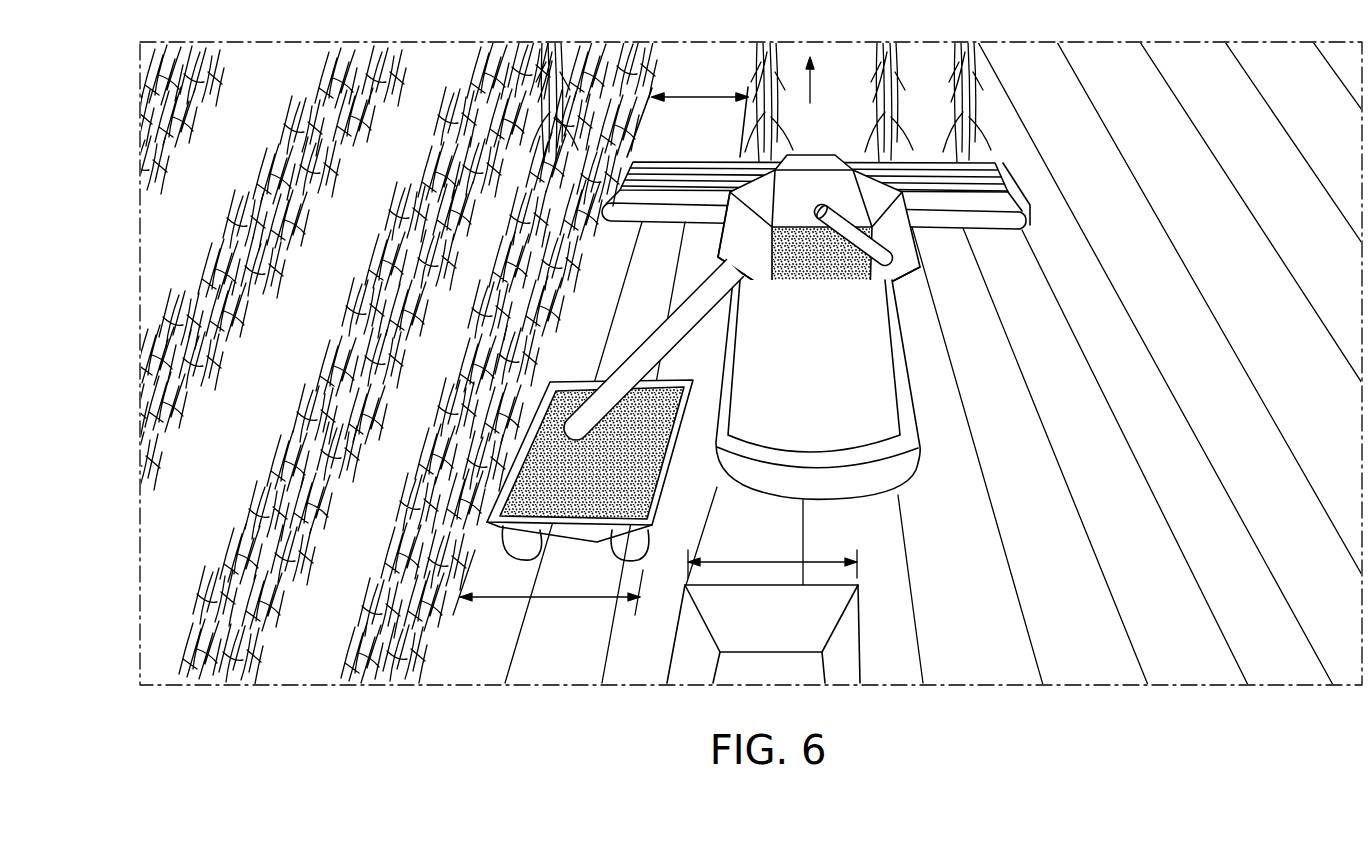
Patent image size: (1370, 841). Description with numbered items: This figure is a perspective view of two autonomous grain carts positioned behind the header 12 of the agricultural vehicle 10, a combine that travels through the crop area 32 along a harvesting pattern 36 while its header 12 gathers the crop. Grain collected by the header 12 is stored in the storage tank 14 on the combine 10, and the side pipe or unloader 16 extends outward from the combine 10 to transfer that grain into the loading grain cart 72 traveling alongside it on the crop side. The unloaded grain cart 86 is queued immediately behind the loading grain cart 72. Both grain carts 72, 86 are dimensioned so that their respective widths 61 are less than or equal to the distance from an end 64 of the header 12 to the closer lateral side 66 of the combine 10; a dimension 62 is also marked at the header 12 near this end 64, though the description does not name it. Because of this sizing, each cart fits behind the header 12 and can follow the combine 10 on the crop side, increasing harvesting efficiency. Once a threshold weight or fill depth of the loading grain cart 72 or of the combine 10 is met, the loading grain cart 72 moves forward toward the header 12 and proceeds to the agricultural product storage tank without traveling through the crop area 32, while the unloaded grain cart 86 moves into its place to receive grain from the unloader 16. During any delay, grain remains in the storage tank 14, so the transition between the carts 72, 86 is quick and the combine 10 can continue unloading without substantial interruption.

The agricultural vehicle 10 is at (942, 432).
The header 12 is at (1000, 177).
The storage tank 14 is at (902, 247).
The unloader 16 is at (655, 348).
The crop area 32 is at (563, 67).
The harvesting pattern 36 is at (812, 88).
The width 61 is at (770, 562).
The header width 62 is at (703, 96).
The end of the header 64 is at (593, 167).
The lateral side of the combine 66 is at (720, 232).
The loading grain cart 72 is at (650, 473).
The unloaded grain cart 86 is at (845, 645).